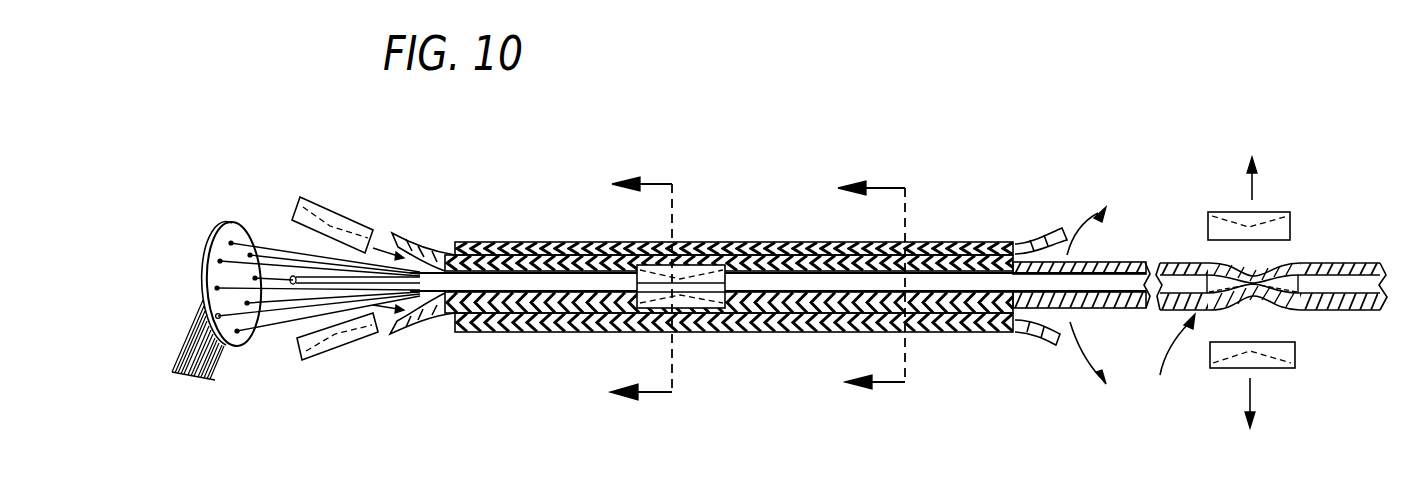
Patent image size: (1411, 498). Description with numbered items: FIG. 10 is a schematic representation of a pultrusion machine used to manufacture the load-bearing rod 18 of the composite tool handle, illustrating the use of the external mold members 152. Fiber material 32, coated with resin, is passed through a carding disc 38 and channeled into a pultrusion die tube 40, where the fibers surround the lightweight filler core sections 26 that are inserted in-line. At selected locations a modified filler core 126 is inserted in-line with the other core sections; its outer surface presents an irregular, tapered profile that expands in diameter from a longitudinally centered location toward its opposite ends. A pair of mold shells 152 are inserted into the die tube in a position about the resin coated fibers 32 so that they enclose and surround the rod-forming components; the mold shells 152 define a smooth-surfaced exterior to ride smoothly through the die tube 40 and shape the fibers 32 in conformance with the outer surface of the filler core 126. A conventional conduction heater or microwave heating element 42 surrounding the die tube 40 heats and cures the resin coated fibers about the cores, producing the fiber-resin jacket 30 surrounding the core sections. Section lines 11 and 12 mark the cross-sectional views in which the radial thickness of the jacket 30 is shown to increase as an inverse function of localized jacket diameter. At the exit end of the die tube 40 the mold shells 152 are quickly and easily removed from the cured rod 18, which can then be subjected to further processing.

The section line 11- 11 is at (871, 285).
The section line 12- 12 is at (641, 288).
The load-bearing rod 18 is at (1169, 359).
The lightweight filler core section 26 is at (1183, 266).
The fiber-resin jacket 30 is at (812, 302).
The fiber material 32 is at (183, 352).
The carding disc 38 is at (223, 228).
The pultrusion die tube 40 is at (486, 256).
The microwave heating element 42 is at (743, 247).
The modified filler core 126 is at (1287, 274).
The external mold members 152 is at (330, 210).